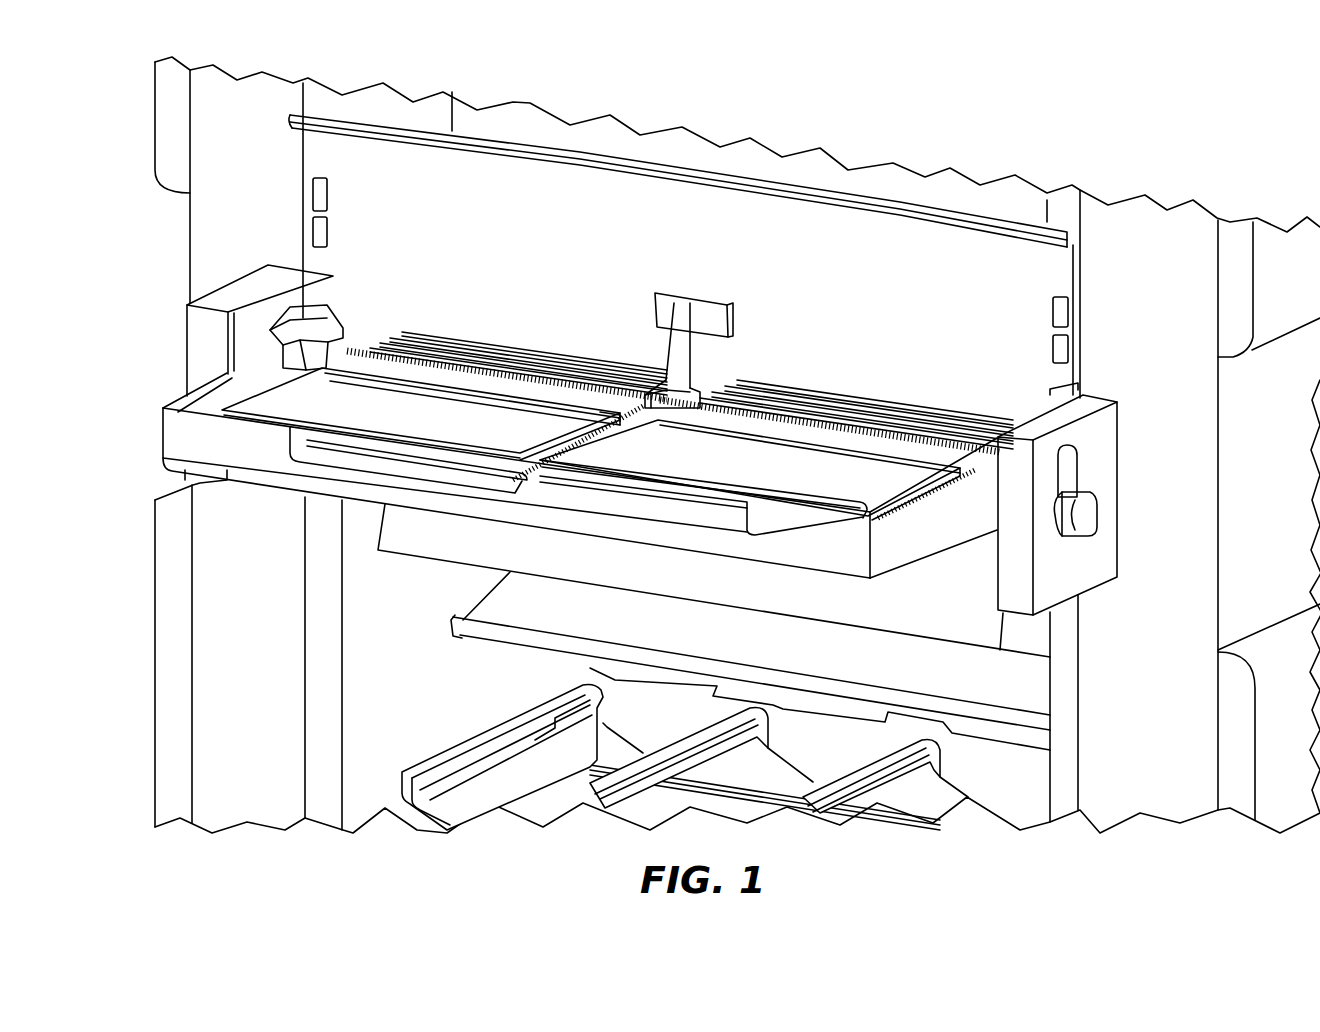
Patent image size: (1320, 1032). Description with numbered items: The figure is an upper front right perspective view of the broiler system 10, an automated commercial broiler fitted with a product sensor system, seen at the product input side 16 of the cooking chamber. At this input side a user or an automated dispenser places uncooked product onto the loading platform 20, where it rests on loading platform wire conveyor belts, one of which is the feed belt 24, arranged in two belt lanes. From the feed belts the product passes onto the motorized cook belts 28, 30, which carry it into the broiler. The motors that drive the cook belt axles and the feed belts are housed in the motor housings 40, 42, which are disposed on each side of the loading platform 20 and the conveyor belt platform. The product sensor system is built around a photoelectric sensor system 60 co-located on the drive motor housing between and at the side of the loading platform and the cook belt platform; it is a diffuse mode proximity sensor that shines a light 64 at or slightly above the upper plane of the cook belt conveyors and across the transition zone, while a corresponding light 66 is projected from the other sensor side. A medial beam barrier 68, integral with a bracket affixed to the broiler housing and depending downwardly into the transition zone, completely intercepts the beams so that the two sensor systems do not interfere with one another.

The broiler system 10 is at (160, 280).
The product input side 16 is at (157, 633).
The loading platform 20 is at (567, 427).
The loading platform wire conveyor belt (feed belt) 24 is at (785, 467).
The cooking conveyor belt (cook belt) 28 is at (460, 340).
The cooking conveyor belt (cook belt) 30 is at (945, 415).
The motor housing 40 is at (180, 112).
The motor housing 42 is at (1097, 451).
The photoelectric sensor system 60 is at (292, 312).
The light 64 is at (637, 387).
The light 66 is at (833, 392).
The medial beam barrier 68 is at (653, 397).